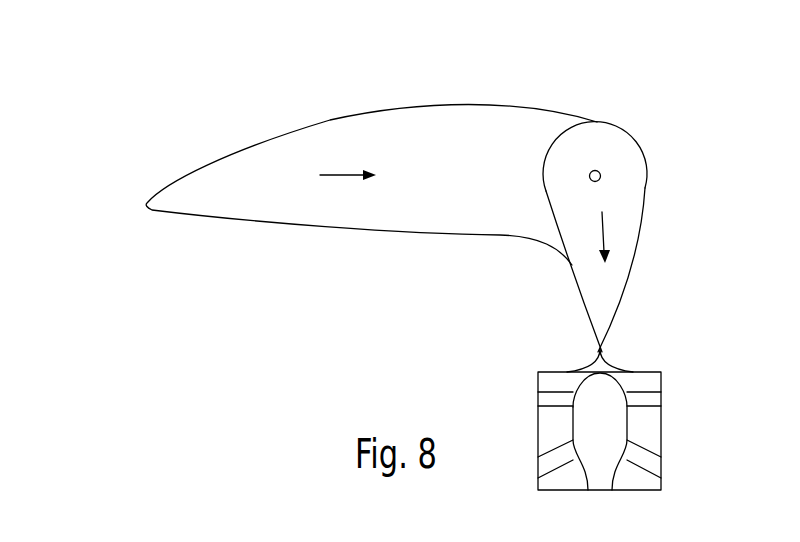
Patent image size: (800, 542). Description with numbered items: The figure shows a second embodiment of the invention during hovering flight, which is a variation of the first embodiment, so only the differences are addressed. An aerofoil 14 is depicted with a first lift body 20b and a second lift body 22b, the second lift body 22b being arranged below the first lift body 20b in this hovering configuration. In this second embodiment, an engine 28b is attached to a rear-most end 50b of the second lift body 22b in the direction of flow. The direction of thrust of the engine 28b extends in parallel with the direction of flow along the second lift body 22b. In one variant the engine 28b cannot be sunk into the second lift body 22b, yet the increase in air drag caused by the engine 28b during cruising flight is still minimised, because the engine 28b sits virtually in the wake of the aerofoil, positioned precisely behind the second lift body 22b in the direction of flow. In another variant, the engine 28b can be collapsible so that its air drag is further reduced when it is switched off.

The flap assembly 14 is at (215, 127).
The airfoil body 20b is at (332, 215).
The second lift body 22b is at (623, 275).
The rear-most end 50b is at (605, 340).
The engine 28b is at (655, 425).